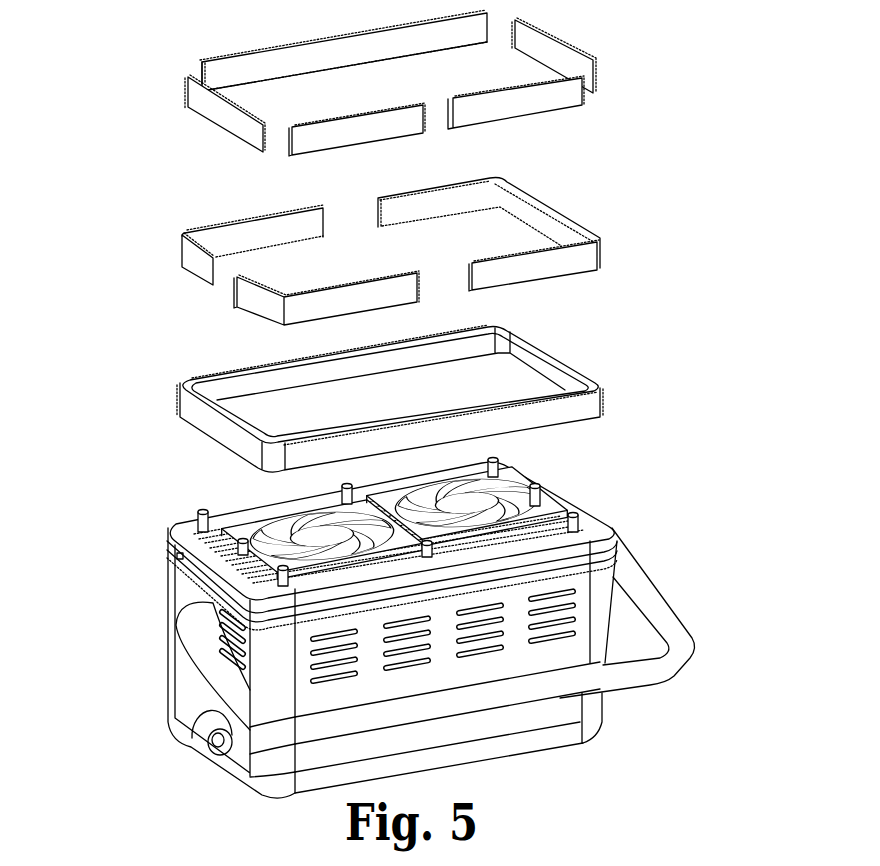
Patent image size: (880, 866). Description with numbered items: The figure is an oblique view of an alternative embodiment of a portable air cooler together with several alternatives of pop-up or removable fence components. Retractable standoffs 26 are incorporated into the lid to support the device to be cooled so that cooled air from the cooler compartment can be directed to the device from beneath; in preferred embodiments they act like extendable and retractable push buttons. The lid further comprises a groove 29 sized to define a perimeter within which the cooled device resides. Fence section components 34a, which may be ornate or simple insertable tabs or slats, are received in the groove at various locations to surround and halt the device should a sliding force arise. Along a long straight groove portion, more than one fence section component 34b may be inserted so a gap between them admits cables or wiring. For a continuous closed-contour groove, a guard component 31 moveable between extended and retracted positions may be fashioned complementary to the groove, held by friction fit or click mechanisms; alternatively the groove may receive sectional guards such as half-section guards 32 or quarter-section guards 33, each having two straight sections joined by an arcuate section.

The retractable standoffs 26 is at (187, 518).
The groove 29 is at (563, 492).
The guard component 31 is at (600, 362).
The half-section guards 32 is at (585, 215).
The quarter-section guards 33 is at (243, 307).
The fence section components 34a is at (290, 46).
The fence section component 34b is at (383, 143).